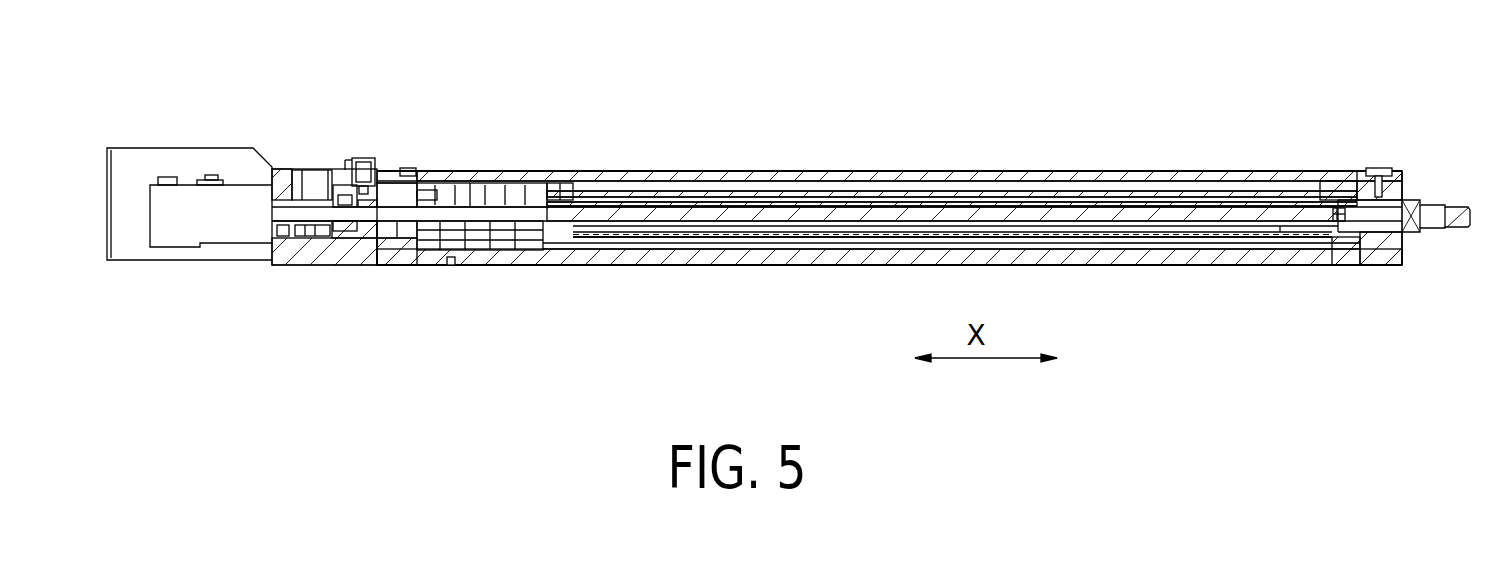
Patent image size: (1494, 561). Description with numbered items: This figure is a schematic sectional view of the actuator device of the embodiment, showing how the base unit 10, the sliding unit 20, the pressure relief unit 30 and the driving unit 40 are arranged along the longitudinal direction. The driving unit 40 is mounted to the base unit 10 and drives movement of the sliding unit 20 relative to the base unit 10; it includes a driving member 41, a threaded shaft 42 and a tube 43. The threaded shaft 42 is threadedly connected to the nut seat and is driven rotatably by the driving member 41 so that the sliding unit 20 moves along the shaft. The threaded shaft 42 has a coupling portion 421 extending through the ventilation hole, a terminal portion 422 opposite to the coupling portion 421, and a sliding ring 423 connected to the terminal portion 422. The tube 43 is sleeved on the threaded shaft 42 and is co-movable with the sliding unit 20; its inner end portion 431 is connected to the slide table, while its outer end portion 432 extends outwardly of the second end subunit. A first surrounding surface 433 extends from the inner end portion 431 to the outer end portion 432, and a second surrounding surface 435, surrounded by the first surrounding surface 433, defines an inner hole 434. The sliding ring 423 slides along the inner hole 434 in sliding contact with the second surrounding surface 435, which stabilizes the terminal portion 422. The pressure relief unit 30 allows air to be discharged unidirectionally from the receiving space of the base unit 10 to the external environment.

The base unit 10 is at (1157, 280).
The sliding unit 20 is at (529, 160).
The pressure relief unit 30 is at (374, 145).
The driving unit 40 is at (149, 178).
The driving member 41 is at (237, 208).
The threaded shaft 42 is at (830, 220).
The coupling portion 421 is at (347, 225).
The terminal portion 422 is at (1293, 217).
The sliding ring 423 is at (1338, 215).
The tube 43 is at (1237, 202).
The inner end portion 431 is at (548, 182).
The outer end portion 432 is at (1408, 198).
The first surrounding surface 433 is at (1142, 198).
The inner hole 434 is at (1093, 218).
The second surrounding surface 435 is at (1192, 213).